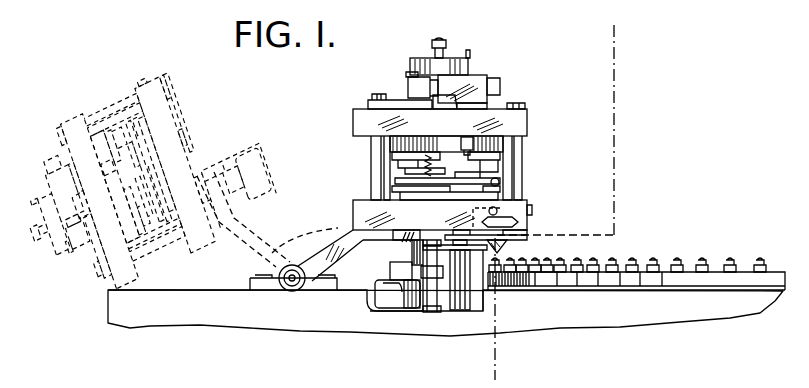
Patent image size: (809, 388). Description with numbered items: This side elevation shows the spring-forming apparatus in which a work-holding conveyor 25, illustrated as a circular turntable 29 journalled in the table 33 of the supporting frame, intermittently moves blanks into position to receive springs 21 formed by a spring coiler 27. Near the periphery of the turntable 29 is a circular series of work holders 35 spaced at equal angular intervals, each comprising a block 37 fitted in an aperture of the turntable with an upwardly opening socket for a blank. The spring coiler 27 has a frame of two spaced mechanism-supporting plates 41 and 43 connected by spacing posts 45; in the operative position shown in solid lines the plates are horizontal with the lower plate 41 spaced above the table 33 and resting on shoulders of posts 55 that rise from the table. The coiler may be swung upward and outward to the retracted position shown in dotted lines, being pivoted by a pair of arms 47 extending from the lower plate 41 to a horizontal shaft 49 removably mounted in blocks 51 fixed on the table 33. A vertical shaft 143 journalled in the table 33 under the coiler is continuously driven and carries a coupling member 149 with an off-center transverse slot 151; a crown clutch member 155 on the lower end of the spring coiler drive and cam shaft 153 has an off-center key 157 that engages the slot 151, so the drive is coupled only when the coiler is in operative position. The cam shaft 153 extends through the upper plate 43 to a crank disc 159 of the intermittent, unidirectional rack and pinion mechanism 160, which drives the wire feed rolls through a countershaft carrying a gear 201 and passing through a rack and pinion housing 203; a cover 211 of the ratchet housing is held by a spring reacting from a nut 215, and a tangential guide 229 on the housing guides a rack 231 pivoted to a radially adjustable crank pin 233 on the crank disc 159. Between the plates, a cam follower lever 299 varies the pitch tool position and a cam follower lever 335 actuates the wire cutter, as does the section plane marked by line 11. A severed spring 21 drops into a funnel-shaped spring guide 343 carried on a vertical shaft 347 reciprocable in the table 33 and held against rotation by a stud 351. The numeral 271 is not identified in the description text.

The section line 11 is at (585, 31).
The spring 21 is at (612, 260).
The work-holding conveyor 25 is at (615, 277).
The spring coiler 27 is at (290, 183).
The circular turntable 29 is at (690, 277).
The table 33 is at (113, 308).
The work holders 35 is at (668, 262).
The block 37 is at (731, 262).
The lower mechanism-supporting plate 41 is at (528, 206).
The upper mechanism-supporting plate 43 is at (528, 128).
The spacing posts 45 is at (371, 149).
The arms 47 is at (332, 250).
The horizontal shaft 49 is at (288, 291).
The blocks 51 is at (252, 283).
The posts 55 is at (477, 282).
The vertical shaft 143 is at (389, 314).
The clutch or coupling member 149 is at (386, 308).
The off-center transverse slot 151 is at (385, 293).
The spring coiler drive and cam shaft 153 is at (395, 140).
The crown clutch or coupling member 155 is at (398, 266).
The off-center key 157 is at (393, 279).
The crank disc 159 is at (375, 99).
The rack and pinion mechanism 160 is at (467, 64).
The gear 201 is at (400, 113).
The rack and pinion housing 203 is at (512, 104).
The cover 211 is at (424, 59).
The nut 215 is at (437, 41).
The tangential guide 229 is at (478, 79).
The rack 231 is at (408, 85).
The crank pin 233 is at (410, 73).
The plate 271 is at (447, 192).
The cam follower lever 299 is at (446, 150).
The cam follower lever 335 is at (448, 180).
The funnel-shaped spring guide 343 is at (509, 246).
The vertical shaft 347 is at (458, 312).
The stud 351 is at (428, 310).